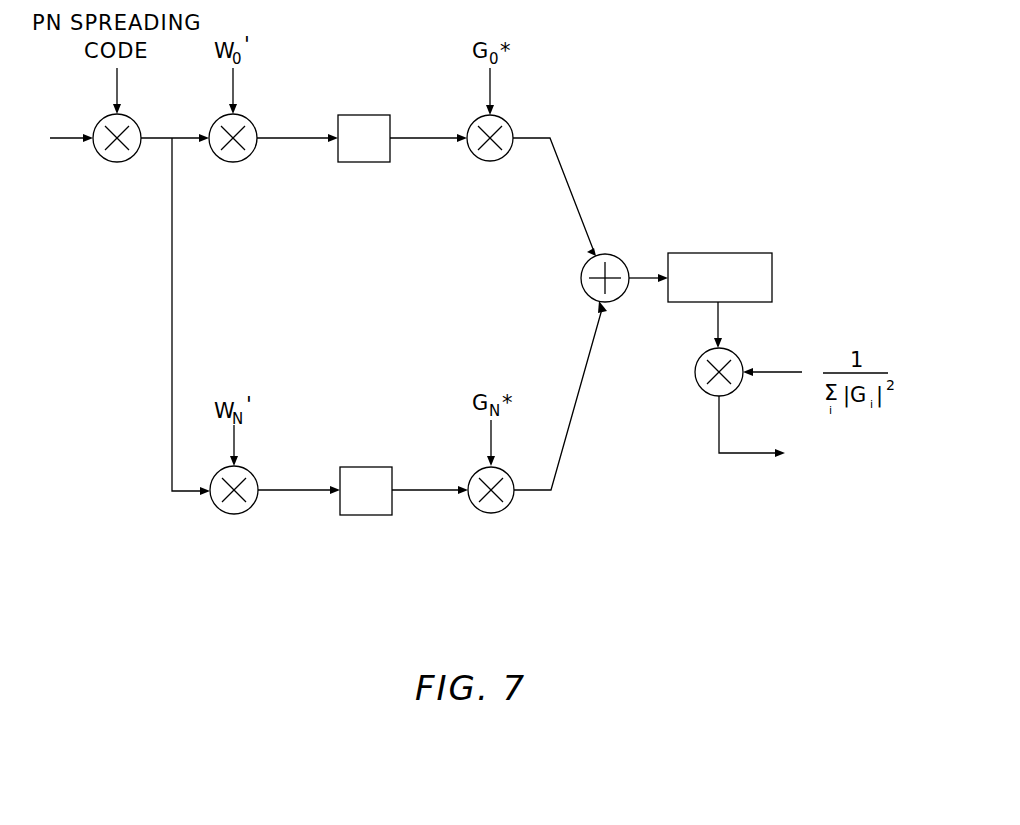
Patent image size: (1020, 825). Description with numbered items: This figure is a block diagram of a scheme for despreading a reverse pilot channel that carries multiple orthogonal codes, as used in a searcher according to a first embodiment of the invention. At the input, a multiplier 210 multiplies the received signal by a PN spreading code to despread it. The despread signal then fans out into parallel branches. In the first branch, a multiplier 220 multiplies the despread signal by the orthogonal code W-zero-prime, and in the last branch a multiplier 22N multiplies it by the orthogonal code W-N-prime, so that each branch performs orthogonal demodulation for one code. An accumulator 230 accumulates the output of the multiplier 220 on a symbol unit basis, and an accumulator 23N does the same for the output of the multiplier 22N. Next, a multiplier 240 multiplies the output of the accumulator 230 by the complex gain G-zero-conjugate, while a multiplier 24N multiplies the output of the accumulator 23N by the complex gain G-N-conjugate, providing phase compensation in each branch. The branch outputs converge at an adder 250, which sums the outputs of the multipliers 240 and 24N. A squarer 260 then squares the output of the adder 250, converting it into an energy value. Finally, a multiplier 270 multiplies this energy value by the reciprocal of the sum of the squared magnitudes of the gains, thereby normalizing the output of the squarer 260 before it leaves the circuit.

The multiplier 210 is at (138, 124).
The multiplier 220 is at (230, 162).
The accumulator 230 is at (360, 114).
The multiplier 240 is at (510, 124).
The adder 250 is at (582, 262).
The squarer 260 is at (736, 252).
The multiplier 270 is at (696, 380).
The multiplier 22N is at (238, 514).
The accumulator 23N is at (370, 466).
The multiplier 24N is at (494, 513).